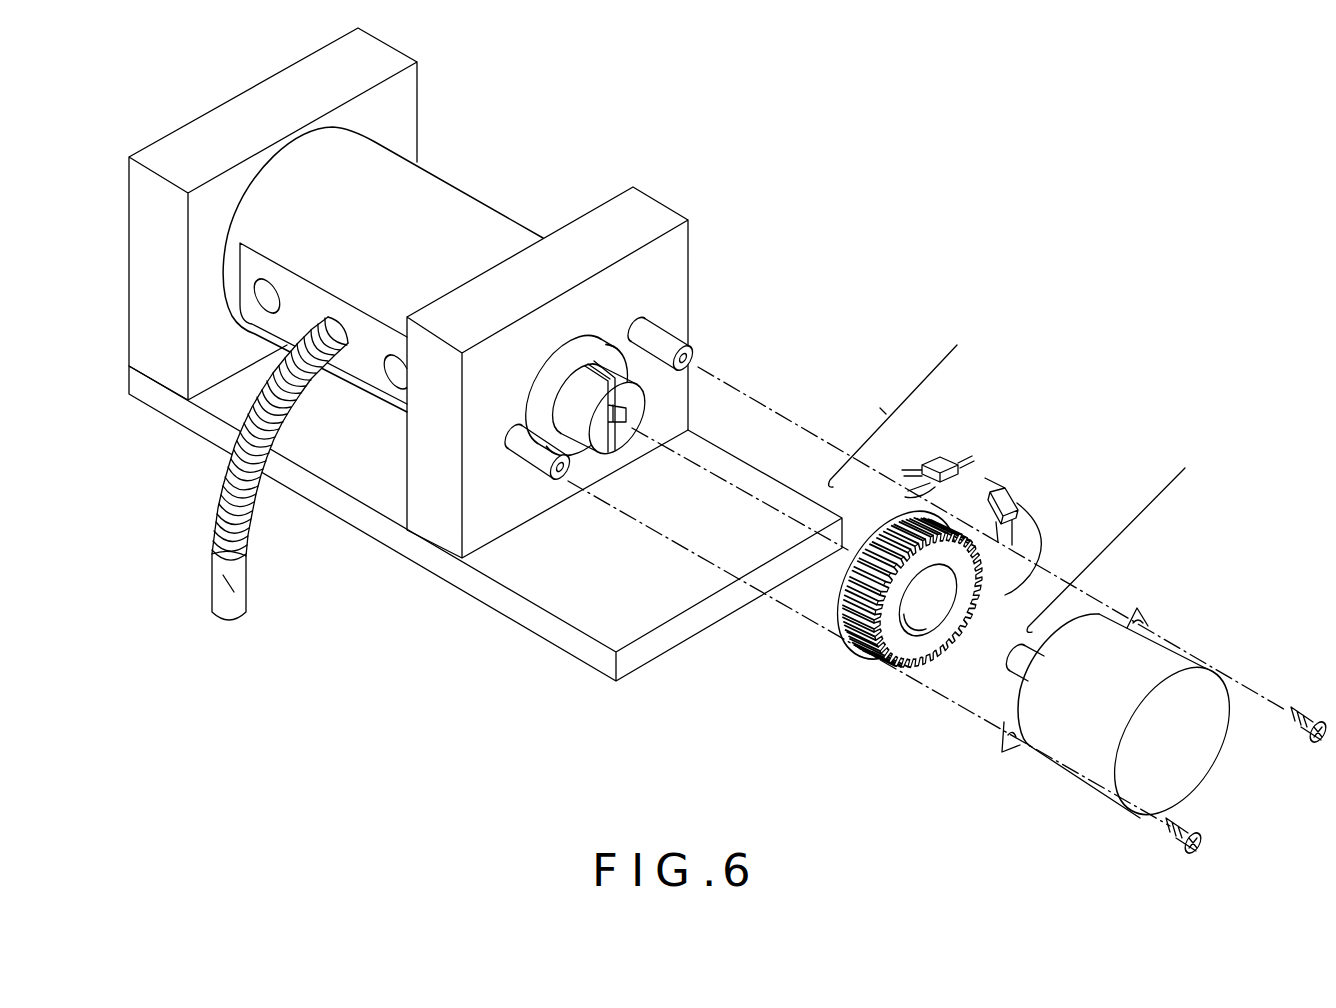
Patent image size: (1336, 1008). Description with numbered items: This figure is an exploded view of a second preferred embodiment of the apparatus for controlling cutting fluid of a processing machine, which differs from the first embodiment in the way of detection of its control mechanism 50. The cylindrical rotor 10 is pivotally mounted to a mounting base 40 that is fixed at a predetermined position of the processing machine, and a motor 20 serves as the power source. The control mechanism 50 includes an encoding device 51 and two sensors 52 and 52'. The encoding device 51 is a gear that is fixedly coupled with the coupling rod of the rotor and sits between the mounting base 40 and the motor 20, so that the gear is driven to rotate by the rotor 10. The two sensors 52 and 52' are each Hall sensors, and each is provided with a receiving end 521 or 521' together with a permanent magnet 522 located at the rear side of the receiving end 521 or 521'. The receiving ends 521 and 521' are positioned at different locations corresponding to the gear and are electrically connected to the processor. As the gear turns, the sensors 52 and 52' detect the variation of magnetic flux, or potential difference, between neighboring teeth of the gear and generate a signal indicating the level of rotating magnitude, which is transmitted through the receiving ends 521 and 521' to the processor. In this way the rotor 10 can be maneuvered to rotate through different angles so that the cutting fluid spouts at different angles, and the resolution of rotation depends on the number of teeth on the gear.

The rotor 10 is at (472, 226).
The motor 20 is at (1061, 757).
The mounting base 40 is at (118, 300).
The control mechanism 50 is at (826, 385).
The encoding device 51 is at (862, 642).
The sensor 52 is at (1106, 550).
The sensor 52' is at (893, 416).
The receiving end 521 is at (1025, 564).
The receiving end 521' is at (882, 494).
The permanent magnet 522 is at (938, 455).